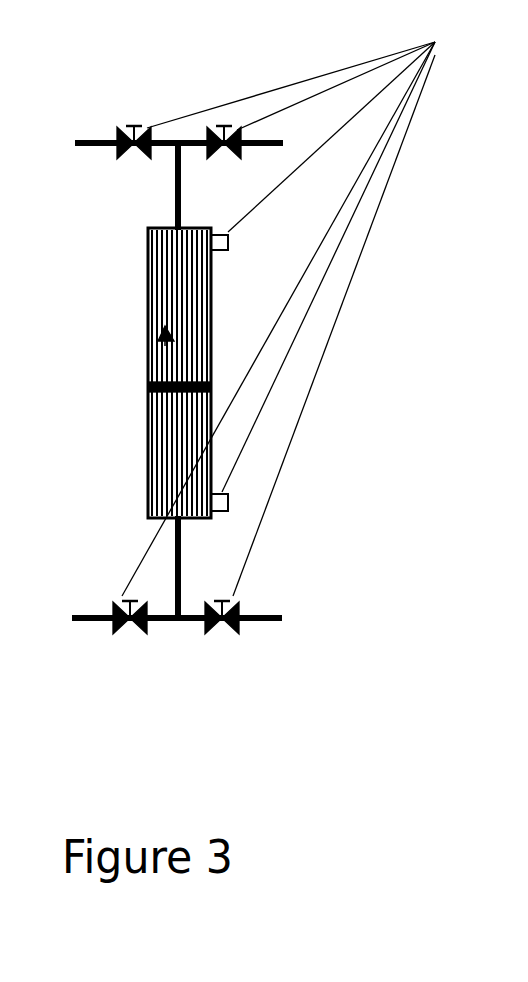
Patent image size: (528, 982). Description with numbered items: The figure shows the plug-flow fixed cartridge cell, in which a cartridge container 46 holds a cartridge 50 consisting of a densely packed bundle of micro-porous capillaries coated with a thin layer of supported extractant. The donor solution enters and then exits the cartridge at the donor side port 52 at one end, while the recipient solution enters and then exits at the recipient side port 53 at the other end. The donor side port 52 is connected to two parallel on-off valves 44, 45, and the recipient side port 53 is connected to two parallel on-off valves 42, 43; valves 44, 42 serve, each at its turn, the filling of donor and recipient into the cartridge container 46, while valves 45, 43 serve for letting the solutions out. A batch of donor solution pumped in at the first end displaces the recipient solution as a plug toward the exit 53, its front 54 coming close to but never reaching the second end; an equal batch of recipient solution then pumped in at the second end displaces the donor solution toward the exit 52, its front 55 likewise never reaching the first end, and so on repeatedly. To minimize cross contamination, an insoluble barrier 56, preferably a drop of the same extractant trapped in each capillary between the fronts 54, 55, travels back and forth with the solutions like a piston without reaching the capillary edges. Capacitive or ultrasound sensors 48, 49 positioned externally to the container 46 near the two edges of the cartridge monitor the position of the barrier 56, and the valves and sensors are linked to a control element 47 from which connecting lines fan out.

The on-off valve 42 is at (228, 655).
The on-off valve 43 is at (130, 650).
The on-off valve 44 is at (136, 100).
The on-off valve 45 is at (216, 108).
The cartridge container 46 is at (208, 343).
The control unit 47 is at (306, 313).
The sensor 48 is at (230, 247).
The sensor 49 is at (225, 490).
The cartridge 50 is at (148, 328).
The donor side port 52 is at (152, 227).
The recipient side port 53 is at (170, 524).
The front of the donor solution batch 54 is at (205, 383).
The front of the recipient solution batch 55 is at (205, 391).
The insoluble barrier layer 56 is at (148, 388).